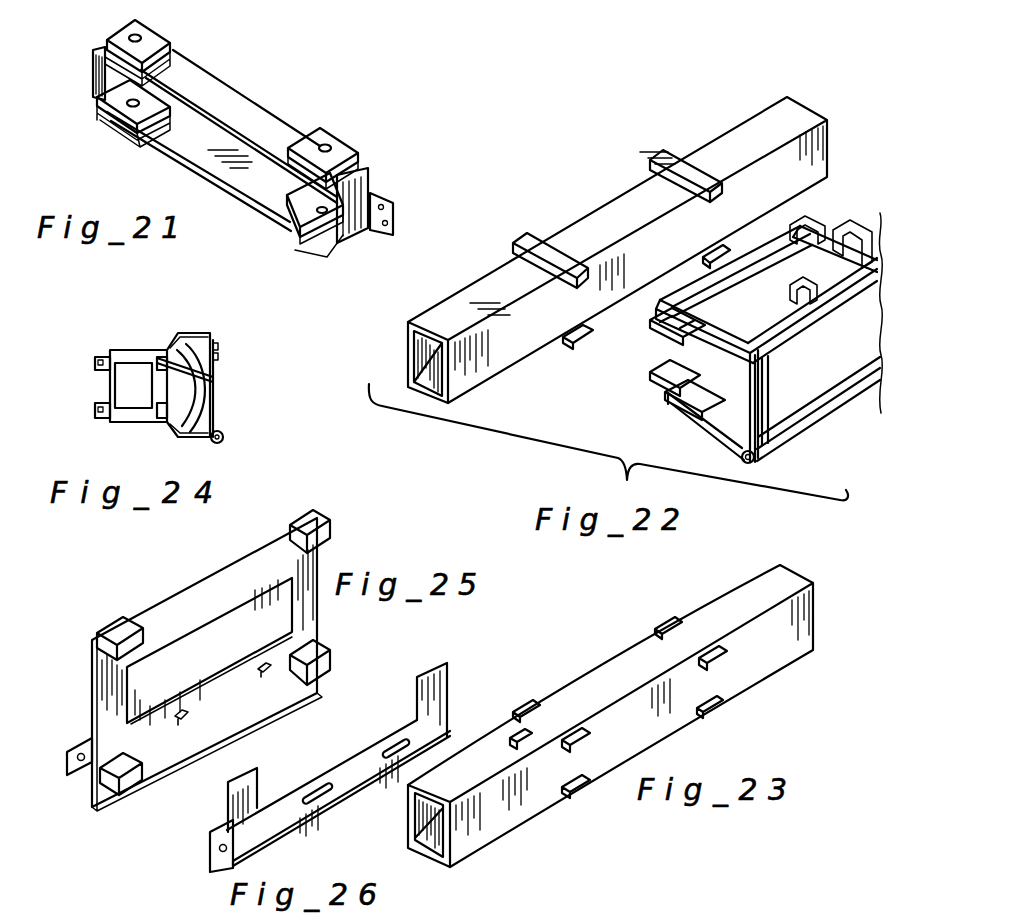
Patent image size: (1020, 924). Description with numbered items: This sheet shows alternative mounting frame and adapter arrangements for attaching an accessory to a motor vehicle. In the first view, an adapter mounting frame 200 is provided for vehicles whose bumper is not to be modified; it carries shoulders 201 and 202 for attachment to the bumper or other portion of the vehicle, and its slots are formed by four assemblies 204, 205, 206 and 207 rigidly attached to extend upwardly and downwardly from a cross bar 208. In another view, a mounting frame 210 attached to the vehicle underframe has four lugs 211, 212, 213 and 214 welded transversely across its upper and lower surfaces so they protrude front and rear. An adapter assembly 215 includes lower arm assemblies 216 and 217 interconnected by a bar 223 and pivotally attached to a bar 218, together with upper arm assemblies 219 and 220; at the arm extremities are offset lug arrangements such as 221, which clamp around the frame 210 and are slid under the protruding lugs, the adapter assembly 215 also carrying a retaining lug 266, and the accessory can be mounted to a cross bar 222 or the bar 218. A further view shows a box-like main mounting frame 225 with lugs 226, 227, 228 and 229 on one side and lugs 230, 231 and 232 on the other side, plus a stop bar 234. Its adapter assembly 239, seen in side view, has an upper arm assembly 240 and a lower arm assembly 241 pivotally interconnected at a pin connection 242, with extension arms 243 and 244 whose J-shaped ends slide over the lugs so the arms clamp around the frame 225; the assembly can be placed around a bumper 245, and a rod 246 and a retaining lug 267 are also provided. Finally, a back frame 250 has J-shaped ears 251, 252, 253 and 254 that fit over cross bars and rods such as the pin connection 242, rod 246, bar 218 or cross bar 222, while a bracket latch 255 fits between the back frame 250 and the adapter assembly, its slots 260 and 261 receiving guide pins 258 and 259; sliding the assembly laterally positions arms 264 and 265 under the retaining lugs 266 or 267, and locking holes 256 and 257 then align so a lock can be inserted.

In FIG. 21, the adapter mounting frame 200 is at (240, 139).
In FIG. 21, the shoulder 201 is at (86, 46).
In FIG. 21, the shoulder 202 is at (388, 190).
In FIG. 21, the slot-forming assembly 204 is at (125, 35).
In FIG. 21, the slot-forming assembly 205 is at (350, 143).
In FIG. 21, the slot-forming assembly 206 is at (121, 135).
In FIG. 21, the slot-forming assembly 207 is at (312, 250).
In FIG. 21, the cross bar 208 is at (225, 93).
In FIG. 22, the mounting frame 210 is at (607, 217).
In FIG. 22, the lug 211 is at (510, 250).
In FIG. 22, the lug 212 is at (672, 158).
In FIG. 22, the lug 213 is at (567, 343).
In FIG. 22, the lug 214 is at (710, 263).
In FIG. 22, the adapter assembly 215 is at (738, 416).
In FIG. 22, the lower arm assembly 216 is at (722, 443).
In FIG. 22, the lower arm assembly 217 is at (870, 393).
In FIG. 22, the bar 218 is at (780, 438).
In FIG. 22, the upper arm assembly 219 is at (718, 318).
In FIG. 22, the upper arm assembly 220 is at (733, 324).
In FIG. 22, the offset lug arrangement 221 is at (650, 337).
In FIG. 22, the cross bar 222 is at (796, 337).
In FIG. 22, the bar 223 is at (665, 395).
In FIG. 22, the retaining lug 266 is at (766, 368).
In FIG. 24, the box-like main mounting frame 225 is at (112, 386).
In FIG. 23, the box-like main mounting frame 225 is at (627, 670).
In FIG. 24, the lug 226 is at (214, 377).
In FIG. 23, the lug 226 is at (590, 737).
In FIG. 23, the lug 227 is at (582, 795).
In FIG. 23, the lug 228 is at (720, 658).
In FIG. 23, the lug 229 is at (720, 709).
In FIG. 24, the lug 230 is at (103, 357).
In FIG. 23, the lug 230 is at (518, 710).
In FIG. 23, the lug 231 is at (665, 622).
In FIG. 23, the stop bar 234 is at (527, 733).
In FIG. 24, the adapter assembly 239 is at (212, 373).
In FIG. 24, the upper arm assembly 240 is at (182, 332).
In FIG. 24, the lower arm assembly 241 is at (193, 440).
In FIG. 24, the pin connection 242 is at (222, 437).
In FIG. 24, the extension arm 243 is at (97, 418).
In FIG. 24, the extension arm 244 is at (95, 358).
In FIG. 24, the bumper 245 is at (200, 407).
In FIG. 24, the rod 246 is at (218, 345).
In FIG. 24, the retaining lug 267 is at (219, 358).
In FIG. 24, the lug 232 is at (100, 412).
In FIG. 25, the back frame 250 is at (180, 607).
In FIG. 25, the J-shaped ear 251 is at (110, 633).
In FIG. 25, the J-shaped ear 252 is at (323, 533).
In FIG. 25, the J-shaped ear 253 is at (128, 775).
In FIG. 25, the J-shaped ear 254 is at (323, 660).
In FIG. 25, the locking hole 257 is at (82, 752).
In FIG. 25, the guide pin 258 is at (178, 724).
In FIG. 25, the guide pin 259 is at (260, 669).
In FIG. 26, the bracket latch 255 is at (353, 773).
In FIG. 26, the locking hole 256 is at (216, 868).
In FIG. 26, the slot 260 is at (313, 802).
In FIG. 26, the slot 261 is at (393, 745).
In FIG. 26, the arm 264 is at (257, 787).
In FIG. 26, the arm 265 is at (432, 672).